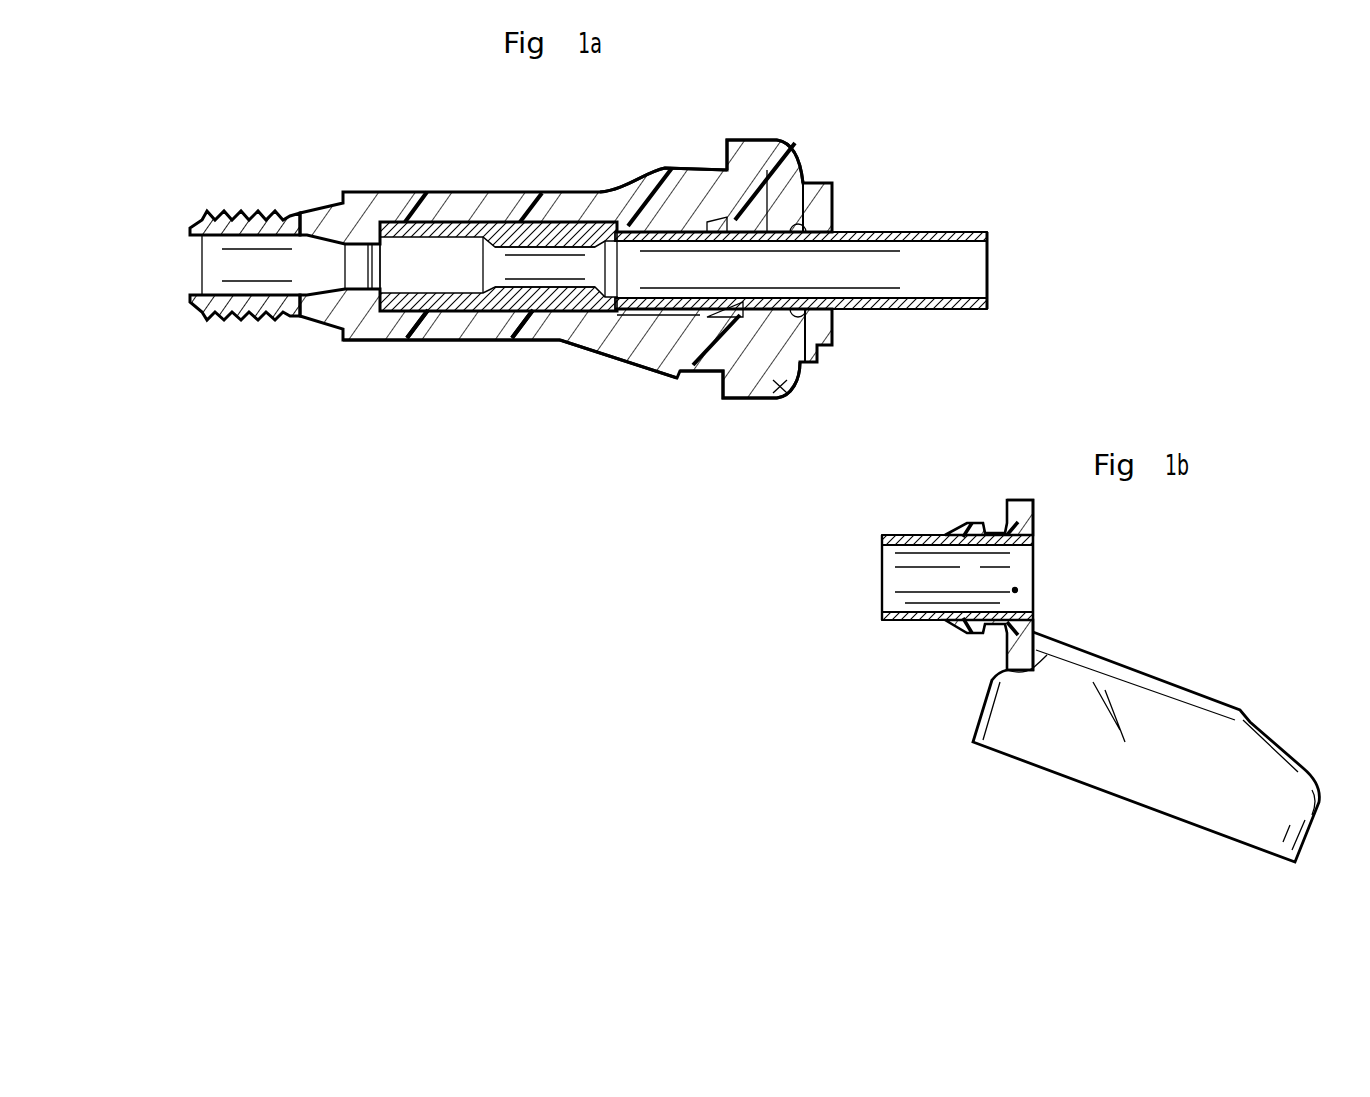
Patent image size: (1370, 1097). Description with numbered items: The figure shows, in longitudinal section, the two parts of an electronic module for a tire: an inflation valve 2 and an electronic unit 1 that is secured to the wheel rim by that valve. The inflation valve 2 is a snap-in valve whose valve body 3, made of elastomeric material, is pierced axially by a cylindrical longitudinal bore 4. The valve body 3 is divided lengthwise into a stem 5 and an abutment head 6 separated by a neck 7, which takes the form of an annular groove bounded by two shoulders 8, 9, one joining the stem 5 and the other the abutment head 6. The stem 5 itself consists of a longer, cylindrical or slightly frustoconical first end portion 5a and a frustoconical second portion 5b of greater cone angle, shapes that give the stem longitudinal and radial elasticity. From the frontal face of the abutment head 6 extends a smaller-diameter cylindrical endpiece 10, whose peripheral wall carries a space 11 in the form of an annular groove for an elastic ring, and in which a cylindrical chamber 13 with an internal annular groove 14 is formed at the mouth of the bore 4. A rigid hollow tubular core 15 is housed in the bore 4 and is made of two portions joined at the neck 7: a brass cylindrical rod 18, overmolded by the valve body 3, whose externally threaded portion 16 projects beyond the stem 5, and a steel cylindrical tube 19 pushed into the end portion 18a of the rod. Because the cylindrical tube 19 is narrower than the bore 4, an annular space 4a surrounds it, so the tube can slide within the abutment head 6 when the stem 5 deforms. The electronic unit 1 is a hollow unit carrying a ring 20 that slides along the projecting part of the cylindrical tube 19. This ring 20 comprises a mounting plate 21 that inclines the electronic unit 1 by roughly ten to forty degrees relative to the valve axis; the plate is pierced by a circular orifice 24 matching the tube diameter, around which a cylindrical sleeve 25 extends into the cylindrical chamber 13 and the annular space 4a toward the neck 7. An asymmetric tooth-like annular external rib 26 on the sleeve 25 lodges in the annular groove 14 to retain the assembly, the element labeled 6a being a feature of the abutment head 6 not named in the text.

In FIG. 1B, the electronic unit 1 is at (1093, 810).
In FIG. 1A, the inflation valve 2 is at (512, 433).
In FIG. 1A, the valve body 3 is at (493, 350).
In FIG. 1A, the cylindrical longitudinal bore 4 is at (530, 238).
In FIG. 1A, the annular space 4a is at (768, 170).
In FIG. 1A, the stem 5 is at (588, 322).
In FIG. 1A, the first end portion 5a is at (427, 328).
In FIG. 1A, the second portion 5b is at (662, 355).
In FIG. 1A, the abutment head 6 is at (793, 378).
In FIG. 1A, the latching lug 6a is at (800, 167).
In FIG. 1A, the neck 7 is at (703, 378).
In FIG. 1A, the shoulder 8 is at (690, 166).
In FIG. 1A, the shoulder 9 is at (727, 162).
In FIG. 1A, the cylindrical endpiece 10 is at (823, 203).
In FIG. 1A, the space 11 is at (808, 357).
In FIG. 1A, the cylindrical chamber 13 is at (832, 312).
In FIG. 1A, the internal annular groove 14 is at (833, 231).
In FIG. 1A, the hollow tubular core 15 is at (398, 232).
In FIG. 1A, the portion of the cylindrical rod 16 is at (247, 211).
In FIG. 1A, the cylindrical rod 18 is at (505, 232).
In FIG. 1A, the end portion of the cylindrical rod 18a is at (626, 305).
In FIG. 1A, the cylindrical tube 19 is at (960, 309).
In FIG. 1B, the ring 20 is at (1047, 578).
In FIG. 1B, the mounting plate 21 is at (1033, 527).
In FIG. 1B, the circular orifice 24 is at (1015, 590).
In FIG. 1B, the cylindrical sleeve 25 is at (994, 531).
In FIG. 1B, the annular external rib 26 is at (972, 636).